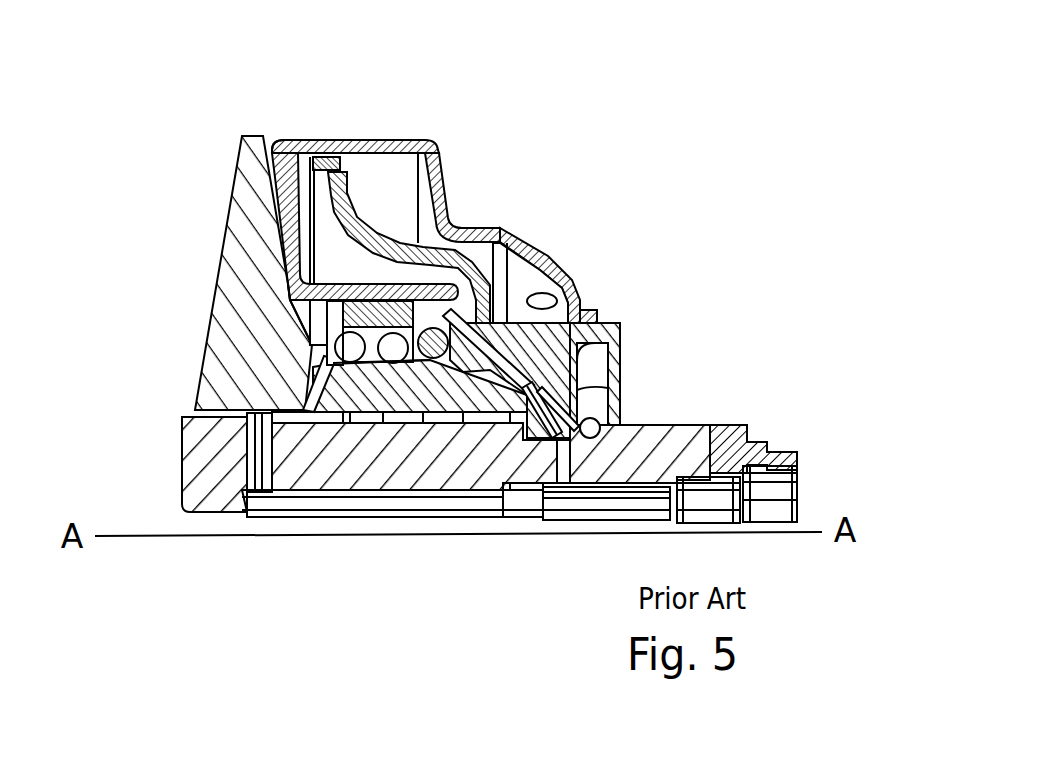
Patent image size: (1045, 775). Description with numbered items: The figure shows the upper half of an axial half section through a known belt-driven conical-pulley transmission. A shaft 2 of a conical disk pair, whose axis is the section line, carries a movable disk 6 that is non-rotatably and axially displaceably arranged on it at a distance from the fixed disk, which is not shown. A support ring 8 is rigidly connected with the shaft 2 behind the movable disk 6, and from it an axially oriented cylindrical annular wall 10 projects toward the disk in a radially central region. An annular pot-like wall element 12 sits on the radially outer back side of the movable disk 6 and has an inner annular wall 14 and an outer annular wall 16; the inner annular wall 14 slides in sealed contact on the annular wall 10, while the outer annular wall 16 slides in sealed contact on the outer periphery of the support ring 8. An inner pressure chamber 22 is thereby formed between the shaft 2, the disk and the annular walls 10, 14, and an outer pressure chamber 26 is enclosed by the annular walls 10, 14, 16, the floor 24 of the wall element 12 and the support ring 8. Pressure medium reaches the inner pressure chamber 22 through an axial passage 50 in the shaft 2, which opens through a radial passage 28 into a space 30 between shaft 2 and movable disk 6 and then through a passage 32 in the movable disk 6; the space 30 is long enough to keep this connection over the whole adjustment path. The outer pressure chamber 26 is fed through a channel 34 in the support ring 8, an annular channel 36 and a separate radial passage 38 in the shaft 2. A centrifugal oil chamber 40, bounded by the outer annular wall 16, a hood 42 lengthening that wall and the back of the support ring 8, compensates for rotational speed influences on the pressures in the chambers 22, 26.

The shaft 2 is at (235, 487).
The movable disk 6 is at (226, 238).
The support ring 8 is at (493, 293).
The annular wall 10 is at (507, 243).
The wall element 12 is at (270, 128).
The inner annular wall 14 is at (282, 266).
The outer annular wall 16 is at (376, 140).
The inner pressure chamber 22 is at (298, 317).
The floor 24 is at (272, 182).
The outer pressure chamber 26 is at (318, 200).
The radial passage 28 is at (252, 445).
The space 30 is at (298, 392).
The passage 32 is at (290, 352).
The channel 34 is at (600, 325).
The annular channel 36 is at (592, 440).
The radial passage 38 is at (558, 440).
The centrifugal oil chamber 40 is at (397, 193).
The hood 42 is at (447, 187).
The axial passage 50 is at (343, 506).